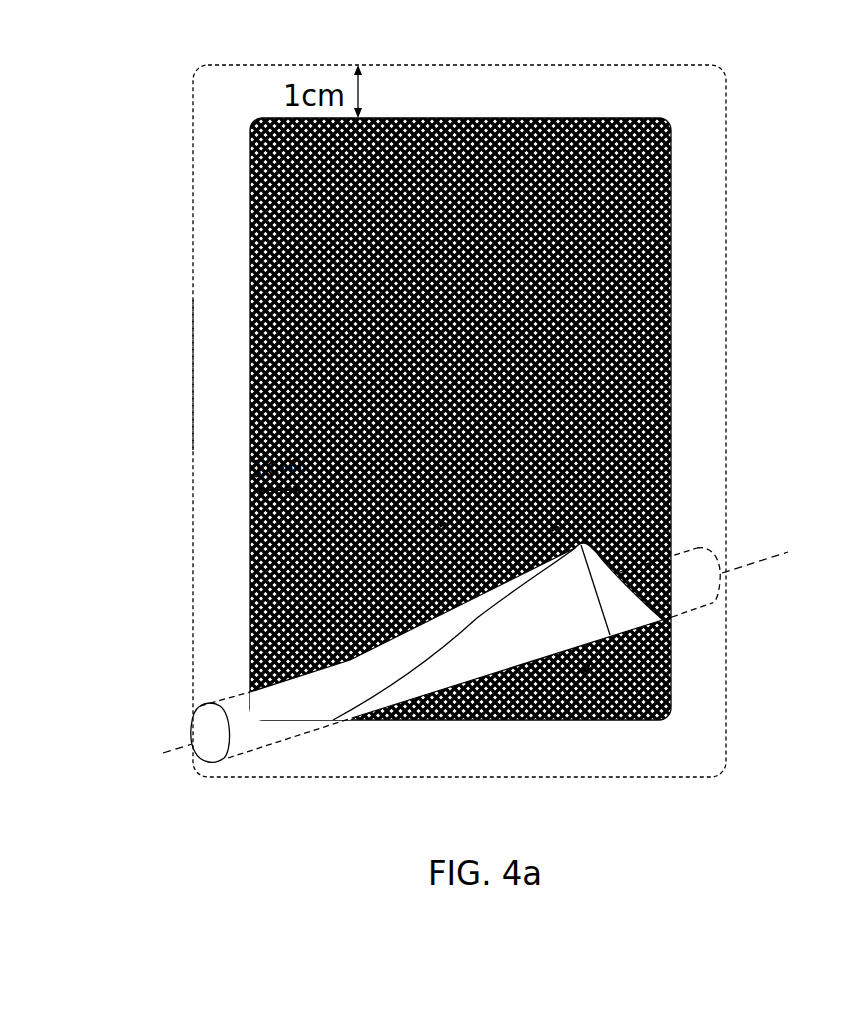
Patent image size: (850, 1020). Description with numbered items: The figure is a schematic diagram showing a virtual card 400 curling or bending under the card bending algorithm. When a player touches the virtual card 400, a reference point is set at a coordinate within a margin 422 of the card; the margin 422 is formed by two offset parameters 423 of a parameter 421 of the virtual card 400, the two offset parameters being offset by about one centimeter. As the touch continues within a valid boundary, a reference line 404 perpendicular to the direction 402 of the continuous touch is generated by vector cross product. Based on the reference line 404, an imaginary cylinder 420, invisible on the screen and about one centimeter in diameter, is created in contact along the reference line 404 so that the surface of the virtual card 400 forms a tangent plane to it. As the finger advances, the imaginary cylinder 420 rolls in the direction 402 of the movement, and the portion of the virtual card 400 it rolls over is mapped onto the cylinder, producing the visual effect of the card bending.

The virtual card 400 is at (188, 128).
The direction of the continuous touch 402 is at (250, 557).
The reference line 404 is at (758, 563).
The imaginary cylinder 420 is at (687, 598).
The parameter 421 is at (672, 202).
The margin 422 is at (265, 187).
The offset parameters 423 is at (250, 397).